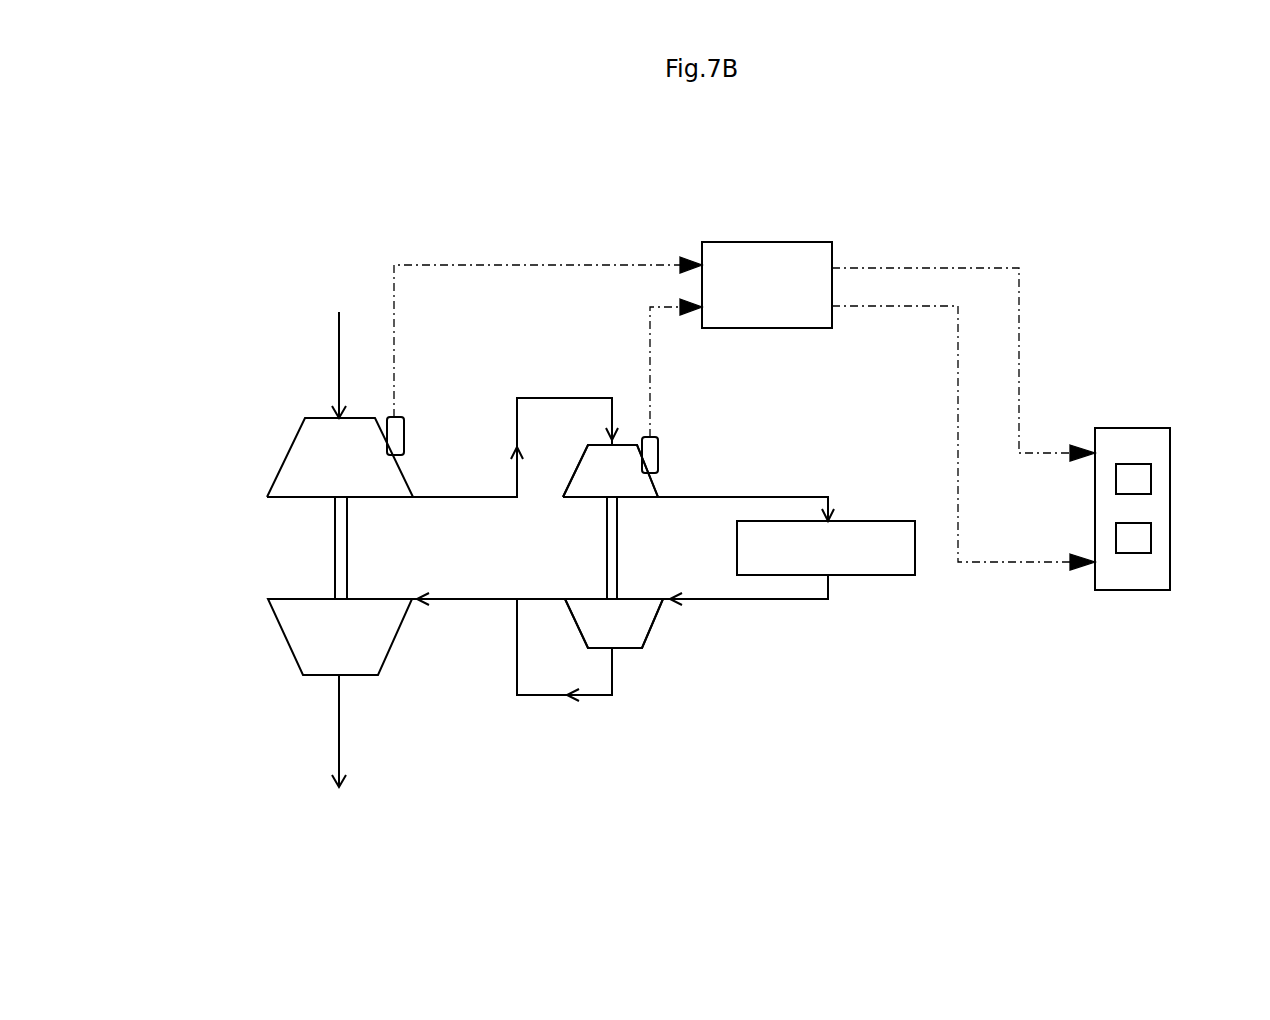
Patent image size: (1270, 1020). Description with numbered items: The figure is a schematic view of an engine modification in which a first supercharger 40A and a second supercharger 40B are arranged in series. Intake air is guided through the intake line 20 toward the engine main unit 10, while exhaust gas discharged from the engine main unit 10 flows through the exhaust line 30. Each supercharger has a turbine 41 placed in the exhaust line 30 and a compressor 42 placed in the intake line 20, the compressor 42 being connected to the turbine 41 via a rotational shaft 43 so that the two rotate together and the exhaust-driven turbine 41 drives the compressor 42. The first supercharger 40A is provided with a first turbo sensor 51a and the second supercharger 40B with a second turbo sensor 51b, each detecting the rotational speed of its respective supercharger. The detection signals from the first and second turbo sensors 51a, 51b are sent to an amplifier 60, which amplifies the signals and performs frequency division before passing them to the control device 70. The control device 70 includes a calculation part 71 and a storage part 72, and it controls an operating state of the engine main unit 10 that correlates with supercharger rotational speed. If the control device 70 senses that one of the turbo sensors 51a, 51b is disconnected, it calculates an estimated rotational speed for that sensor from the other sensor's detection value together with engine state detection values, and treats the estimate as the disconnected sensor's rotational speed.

The engine main unit 10 is at (883, 575).
The intake line 20 is at (560, 396).
The exhaust line 30 is at (527, 703).
The first supercharger 40A is at (570, 562).
The second supercharger 40B is at (451, 552).
The turbine 41 is at (285, 640).
The compressor 42 is at (288, 450).
The rotational shaft 43 is at (348, 583).
The first turbo sensor 51a is at (660, 440).
The second turbo sensor 51b is at (408, 437).
The amplifier 60 is at (745, 309).
The control device 70 is at (1179, 463).
The calculation part 71 is at (1151, 484).
The storage part 72 is at (1151, 543).